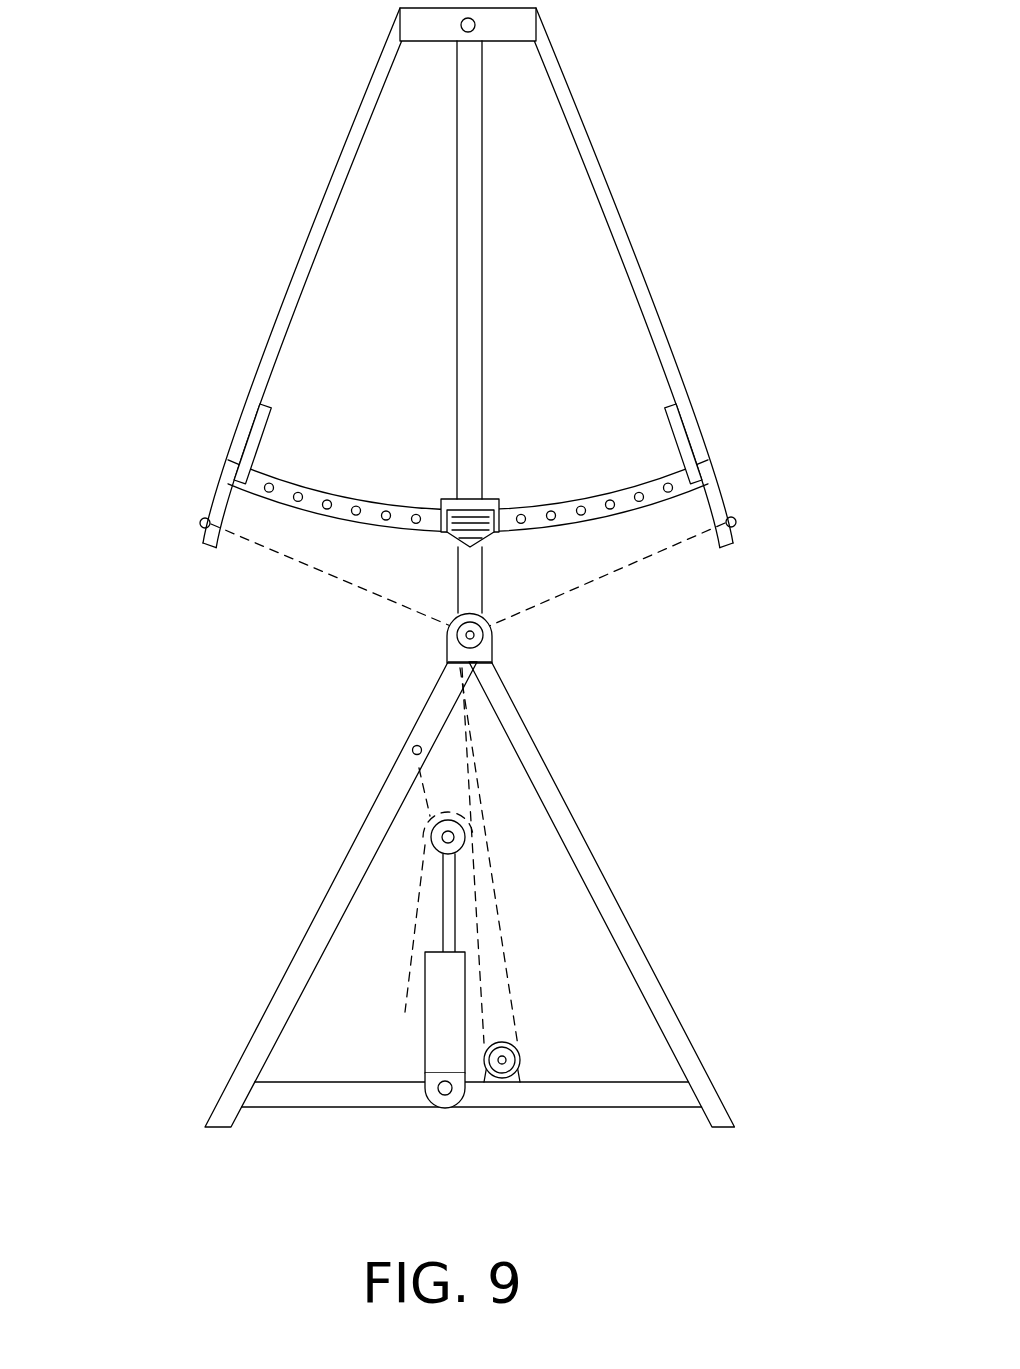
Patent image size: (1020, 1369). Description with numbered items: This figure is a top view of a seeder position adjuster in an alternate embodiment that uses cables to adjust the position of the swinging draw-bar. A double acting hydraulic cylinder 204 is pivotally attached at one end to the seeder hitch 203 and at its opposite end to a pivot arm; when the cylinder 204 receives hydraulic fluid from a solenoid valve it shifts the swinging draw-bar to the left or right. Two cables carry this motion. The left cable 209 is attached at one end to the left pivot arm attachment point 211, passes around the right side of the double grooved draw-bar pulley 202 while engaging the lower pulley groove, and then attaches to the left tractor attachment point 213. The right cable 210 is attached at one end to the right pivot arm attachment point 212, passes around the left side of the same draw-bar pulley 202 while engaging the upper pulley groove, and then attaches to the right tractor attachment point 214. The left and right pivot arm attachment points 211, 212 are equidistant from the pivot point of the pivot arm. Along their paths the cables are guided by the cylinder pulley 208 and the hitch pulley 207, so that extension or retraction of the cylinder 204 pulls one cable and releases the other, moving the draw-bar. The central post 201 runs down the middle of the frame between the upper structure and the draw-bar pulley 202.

The central post 201 is at (483, 305).
The double grooved draw-bar pulley 202 is at (478, 634).
The seeder hitch 203 is at (618, 903).
The double acting hydraulic cylinder 204 is at (443, 1033).
The hitch pulley 207 is at (520, 1057).
The cylinder pulley 208 is at (425, 840).
The left cable 209 is at (327, 575).
The right cable 210 is at (631, 568).
The left pivot arm attachment point 211 is at (400, 741).
The right pivot arm attachment point 212 is at (412, 1094).
The left tractor attachment point 213 is at (204, 502).
The right tractor attachment point 214 is at (720, 496).